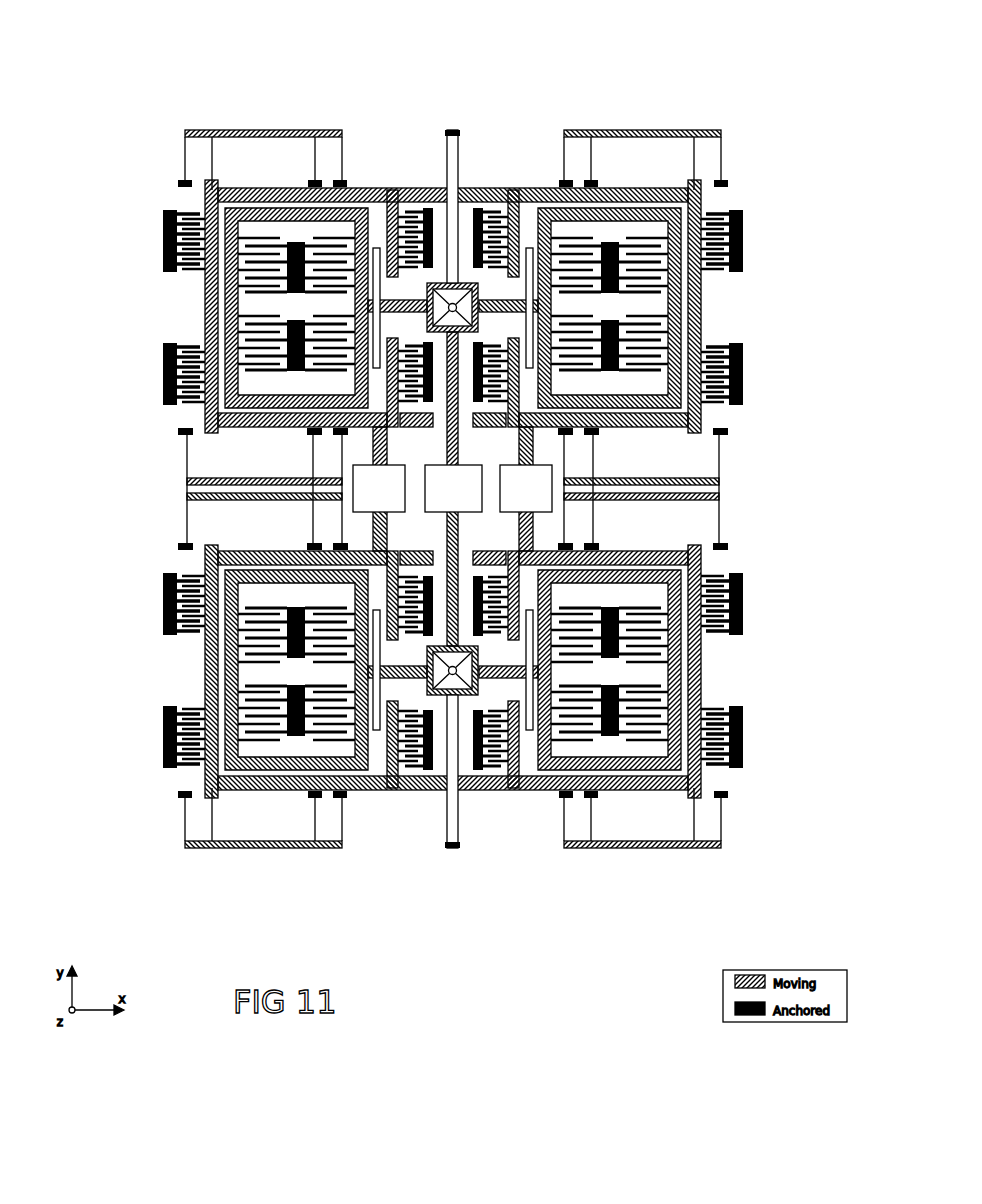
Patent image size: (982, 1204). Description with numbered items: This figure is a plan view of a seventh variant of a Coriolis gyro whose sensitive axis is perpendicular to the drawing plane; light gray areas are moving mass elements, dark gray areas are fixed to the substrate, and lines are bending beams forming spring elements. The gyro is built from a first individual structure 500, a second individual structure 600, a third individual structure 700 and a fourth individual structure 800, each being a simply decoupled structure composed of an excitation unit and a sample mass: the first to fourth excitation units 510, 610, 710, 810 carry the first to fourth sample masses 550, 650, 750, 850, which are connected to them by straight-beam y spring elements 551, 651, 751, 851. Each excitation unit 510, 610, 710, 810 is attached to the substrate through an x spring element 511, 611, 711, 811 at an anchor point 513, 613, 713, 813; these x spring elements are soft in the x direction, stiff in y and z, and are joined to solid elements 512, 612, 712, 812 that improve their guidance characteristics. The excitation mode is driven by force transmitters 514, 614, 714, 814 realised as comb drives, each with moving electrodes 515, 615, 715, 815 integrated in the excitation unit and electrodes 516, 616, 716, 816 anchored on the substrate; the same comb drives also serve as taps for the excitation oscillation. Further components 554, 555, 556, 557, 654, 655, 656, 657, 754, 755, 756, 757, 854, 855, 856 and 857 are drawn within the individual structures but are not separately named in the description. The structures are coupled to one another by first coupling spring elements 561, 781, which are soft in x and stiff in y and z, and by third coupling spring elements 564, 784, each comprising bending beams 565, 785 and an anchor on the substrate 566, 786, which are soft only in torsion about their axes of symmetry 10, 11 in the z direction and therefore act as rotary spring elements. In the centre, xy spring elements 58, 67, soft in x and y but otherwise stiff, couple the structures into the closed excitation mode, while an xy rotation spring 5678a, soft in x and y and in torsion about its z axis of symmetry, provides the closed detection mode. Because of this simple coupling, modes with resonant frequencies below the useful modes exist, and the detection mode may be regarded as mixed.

The axis of symmetry in the z direction 10 is at (487, 207).
The axis of symmetry in the z direction 11 is at (487, 771).
The xy spring element 58 is at (397, 515).
The xy spring element 67 is at (508, 515).
The xy rotation spring 5678a is at (425, 465).
The first individual structure 500 is at (168, 170).
The first excitation unit 510 is at (207, 180).
The first x spring element 511 is at (185, 450).
The solid element 512 is at (240, 477).
The first anchor point 513 is at (207, 448).
The first force transmitter 514 is at (162, 348).
The moving electrode 515 is at (162, 360).
The anchored electrode 516 is at (162, 387).
The first sample mass 550 is at (208, 200).
The first y spring element 551 is at (273, 193).
The first upper anchored electrode 554 is at (163, 245).
The first upper stator fingers 555 is at (165, 267).
The first upper rotor comb 556 is at (233, 287).
The first bracket anchor pads 557 is at (342, 180).
The first coupling spring element 561 is at (447, 145).
The third coupling spring element 564 is at (451, 130).
The bending beam 565 is at (452, 300).
The anchor on the substrate 566 is at (456, 300).
The second individual structure 600 is at (737, 168).
The second excitation unit 610 is at (720, 180).
The second x spring element 611 is at (721, 450).
The solid element 612 is at (666, 477).
The second anchor point 613 is at (699, 448).
The second force transmitter 614 is at (744, 348).
The moving electrode 615 is at (744, 360).
The anchored electrode 616 is at (744, 387).
The second sample mass 650 is at (693, 187).
The second y spring element 651 is at (630, 200).
The second upper anchored electrode 654 is at (743, 245).
The second upper stator fingers 655 is at (741, 267).
The second upper rotor comb 656 is at (673, 287).
The second bracket anchor pads 657 is at (558, 180).
The third individual structure 700 is at (737, 808).
The third excitation unit 710 is at (705, 793).
The third x spring element 711 is at (721, 525).
The solid element 712 is at (666, 502).
The third anchor point 713 is at (699, 557).
The third force transmitter 714 is at (744, 632).
The moving electrode 715 is at (744, 618).
The anchored electrode 716 is at (744, 593).
The third sample mass 750 is at (693, 797).
The third y spring element 751 is at (633, 790).
The third lower anchored electrode 754 is at (743, 733).
The third lower stator fingers 755 is at (741, 711).
The third lower rotor comb 756 is at (673, 691).
The third bracket anchor pads 757 is at (565, 795).
The first coupling spring element 781 is at (447, 832).
The third coupling spring element 784 is at (453, 850).
The bending beam 785 is at (452, 680).
The anchor on the substrate 786 is at (456, 680).
The fourth individual structure 800 is at (168, 808).
The fourth excitation unit 810 is at (203, 793).
The fourth x spring element 811 is at (185, 525).
The solid element 812 is at (240, 502).
The fourth anchor point 813 is at (207, 557).
The fourth force transmitter 814 is at (162, 632).
The moving electrode 815 is at (162, 618).
The anchored electrode 816 is at (162, 593).
The fourth sample mass 850 is at (207, 790).
The fourth y spring element 851 is at (273, 790).
The fourth lower anchored electrode 854 is at (163, 733).
The fourth lower stator fingers 855 is at (165, 711).
The fourth lower rotor comb 856 is at (233, 691).
The fourth bracket anchor pads 857 is at (345, 795).